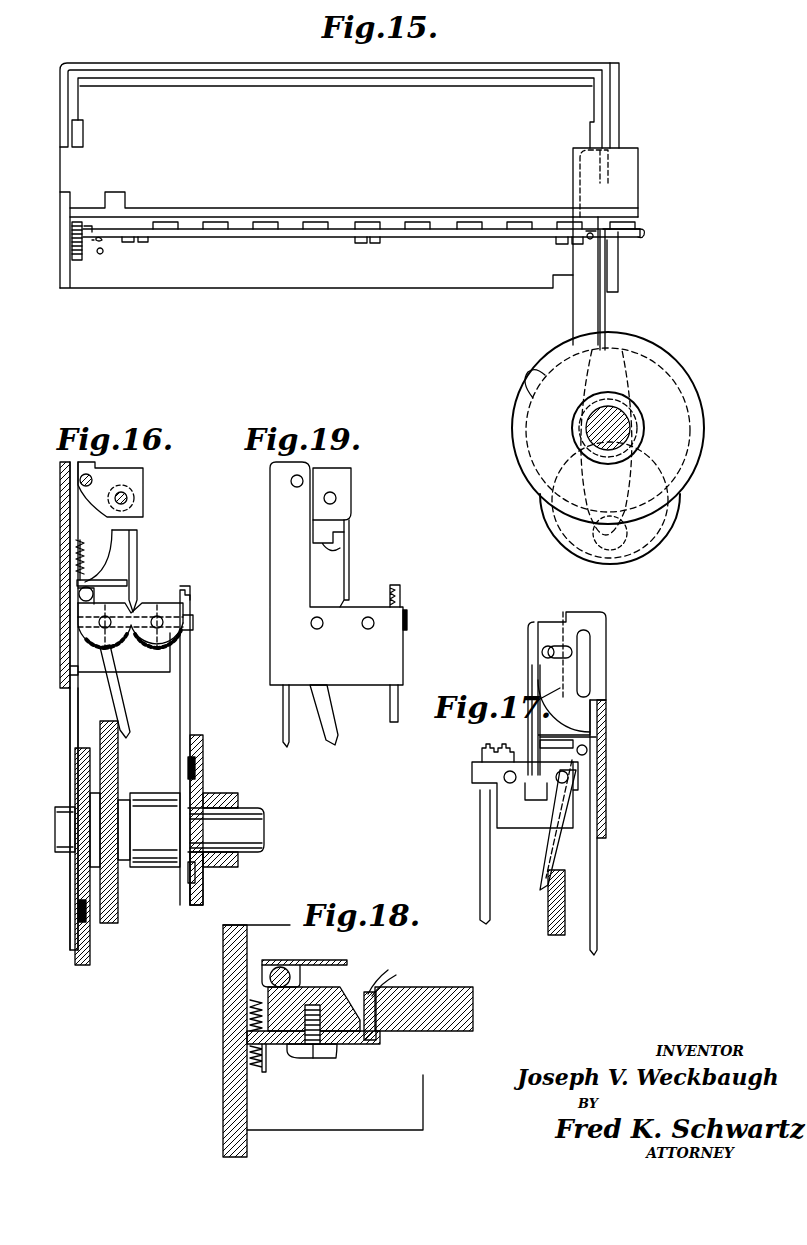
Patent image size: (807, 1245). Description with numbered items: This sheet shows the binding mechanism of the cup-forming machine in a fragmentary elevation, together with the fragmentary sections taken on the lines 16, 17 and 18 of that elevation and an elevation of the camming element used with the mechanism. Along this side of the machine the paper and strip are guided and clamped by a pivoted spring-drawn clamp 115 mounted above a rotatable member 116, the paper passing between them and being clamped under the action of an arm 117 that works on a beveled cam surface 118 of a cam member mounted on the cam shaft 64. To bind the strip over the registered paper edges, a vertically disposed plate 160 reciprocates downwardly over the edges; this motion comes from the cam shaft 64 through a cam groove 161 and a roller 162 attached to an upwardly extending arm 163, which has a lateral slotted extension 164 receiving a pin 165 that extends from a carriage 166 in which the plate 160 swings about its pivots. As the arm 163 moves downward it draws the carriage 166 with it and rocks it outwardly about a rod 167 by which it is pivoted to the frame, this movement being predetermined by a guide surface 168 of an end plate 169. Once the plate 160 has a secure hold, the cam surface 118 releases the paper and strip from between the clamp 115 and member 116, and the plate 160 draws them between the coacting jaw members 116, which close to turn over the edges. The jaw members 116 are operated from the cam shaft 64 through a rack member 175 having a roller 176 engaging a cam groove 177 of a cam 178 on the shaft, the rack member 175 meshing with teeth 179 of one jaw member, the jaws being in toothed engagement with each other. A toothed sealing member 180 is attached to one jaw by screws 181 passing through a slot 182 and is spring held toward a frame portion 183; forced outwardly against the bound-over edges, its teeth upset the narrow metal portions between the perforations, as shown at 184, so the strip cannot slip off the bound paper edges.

In FIG. 15, the section line 16— 16 is at (72, 340).
In FIG. 15, the section line 17— 17 is at (608, 385).
In FIG. 15, the section line 18— 18 is at (365, 296).
In FIG. 15, the cam shaft 64 is at (616, 434).
In FIG. 16, the cam shaft 64 is at (262, 826).
In FIG. 15, the pivoted spring-drawn clamp 115 is at (646, 236).
In FIG. 16, the pivoted spring-drawn clamp 115 is at (107, 582).
In FIG. 17, the pivoted spring-drawn clamp 115 is at (555, 745).
In FIG. 18, the pivoted spring-drawn clamp 115 is at (285, 960).
In FIG. 15, the rotatable member / jaw member 116 is at (84, 254).
In FIG. 16, the rotatable member / jaw member 116 is at (155, 610).
In FIG. 17, the rotatable member / jaw member 116 is at (540, 765).
In FIG. 18, the rotatable member / jaw member 116 is at (350, 987).
In FIG. 15, the arm 117 is at (606, 318).
In FIG. 16, the arm 117 is at (118, 690).
In FIG. 19, the arm 117 is at (328, 708).
In FIG. 17, the arm 117 is at (552, 850).
In FIG. 15, the beveled cam surface 118 is at (704, 470).
In FIG. 16, the beveled cam surface 118 is at (112, 882).
In FIG. 17, the beveled cam surface 118 is at (550, 912).
In FIG. 15, the plate 160 is at (349, 206).
In FIG. 16, the plate 160 is at (138, 542).
In FIG. 19, the plate 160 is at (350, 536).
In FIG. 17, the plate 160 is at (536, 683).
In FIG. 15, the cam groove 161 is at (665, 532).
In FIG. 16, the cam groove 161 is at (78, 882).
In FIG. 15, the roller 162 is at (620, 536).
In FIG. 16, the roller 162 is at (80, 912).
In FIG. 15, the upwardly extending arm 163 is at (572, 308).
In FIG. 16, the upwardly extending arm 163 is at (72, 724).
In FIG. 19, the upwardly extending arm 163 is at (282, 705).
In FIG. 17, the upwardly extending arm 163 is at (598, 890).
In FIG. 16, the lateral slotted extension 164 is at (80, 518).
In FIG. 17, the lateral slotted extension 164 is at (555, 630).
In FIG. 16, the pin 165 is at (128, 498).
In FIG. 19, the pin 165 is at (338, 498).
In FIG. 17, the pin 165 is at (545, 650).
In FIG. 15, the carriage 166 is at (460, 72).
In FIG. 16, the carriage 166 is at (125, 478).
In FIG. 17, the carriage 166 is at (530, 652).
In FIG. 16, the rod 167 is at (93, 480).
In FIG. 19, the rod 167 is at (292, 485).
In FIG. 17, the rod 167 is at (583, 638).
In FIG. 19, the guide surface 168 is at (340, 552).
In FIG. 19, the end plate 169 is at (283, 605).
In FIG. 16, the rack member 175 is at (192, 696).
In FIG. 19, the rack member 175 is at (392, 722).
In FIG. 17, the rack member 175 is at (482, 840).
In FIG. 16, the roller 176 is at (203, 766).
In FIG. 16, the cam groove 177 is at (192, 870).
In FIG. 16, the cam 178 is at (204, 892).
In FIG. 17, the teeth 179 is at (484, 754).
In FIG. 15, the toothed sealing member 180 is at (474, 237).
In FIG. 18, the toothed sealing member 180 is at (356, 1044).
In FIG. 15, the screws 181 is at (558, 244).
In FIG. 18, the screws 181 is at (302, 1052).
In FIG. 18, the slot 182 is at (328, 1050).
In FIG. 18, the frame portion 183 is at (240, 1030).
In FIG. 18, the upset metal portions 184 is at (378, 1040).